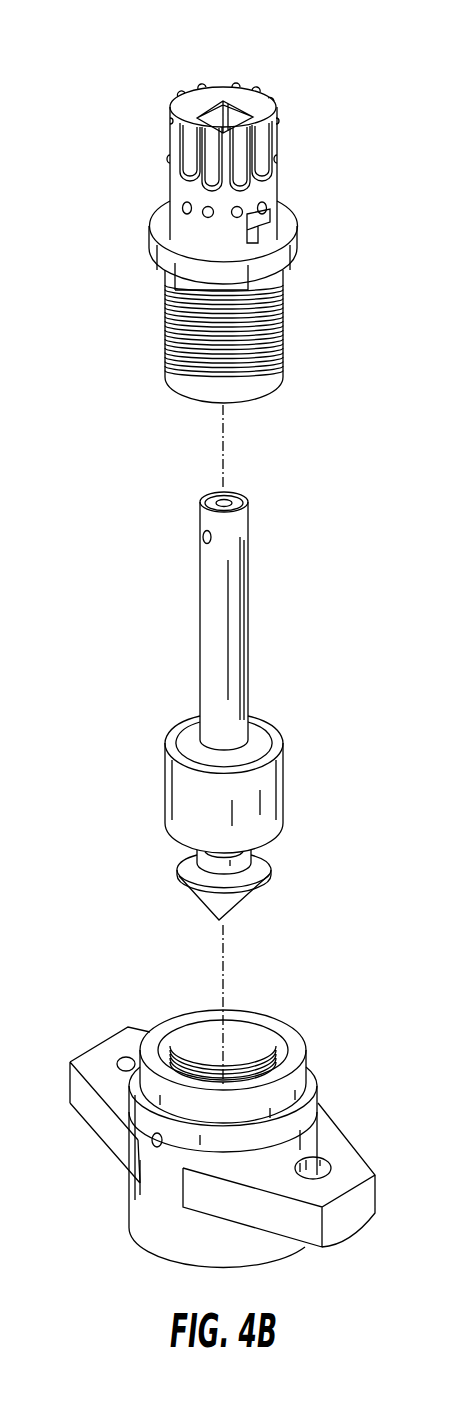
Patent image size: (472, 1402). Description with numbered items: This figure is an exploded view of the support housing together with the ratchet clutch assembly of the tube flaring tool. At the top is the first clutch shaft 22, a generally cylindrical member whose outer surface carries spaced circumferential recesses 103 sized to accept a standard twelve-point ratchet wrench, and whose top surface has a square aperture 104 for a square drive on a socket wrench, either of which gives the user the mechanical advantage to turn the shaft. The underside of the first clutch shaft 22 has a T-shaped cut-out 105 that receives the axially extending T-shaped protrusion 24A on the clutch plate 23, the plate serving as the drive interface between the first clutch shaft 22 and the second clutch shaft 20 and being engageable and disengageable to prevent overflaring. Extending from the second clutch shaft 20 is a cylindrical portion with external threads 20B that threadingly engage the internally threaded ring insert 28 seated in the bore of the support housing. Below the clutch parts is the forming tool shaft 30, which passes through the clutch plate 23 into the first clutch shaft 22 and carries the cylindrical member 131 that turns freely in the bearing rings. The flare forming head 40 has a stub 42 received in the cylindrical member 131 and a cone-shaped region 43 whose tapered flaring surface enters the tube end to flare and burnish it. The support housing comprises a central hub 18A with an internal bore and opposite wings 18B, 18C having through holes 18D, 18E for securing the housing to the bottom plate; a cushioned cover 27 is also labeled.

The first clutch shaft 22 is at (158, 104).
The square aperture 104 is at (238, 110).
The spaced circumferential recesses 103 is at (262, 153).
The T-shaped cut-out 105 is at (266, 212).
The clutch plate 23 is at (286, 221).
The T-shaped protrusion 24A is at (254, 233).
The second clutch shaft 20 is at (264, 336).
The external threads 20B is at (284, 352).
The forming tool shaft 30 is at (248, 633).
The cylindrical member 131 is at (269, 800).
The stub 42 is at (252, 858).
The flare forming head 40 is at (216, 895).
The cone-shaped region 43 is at (229, 898).
The cushioned cover 27 is at (280, 1042).
The ring insert 28 is at (289, 1055).
The central hub 18A is at (152, 1214).
The wing 18B is at (75, 1088).
The wing 18C is at (358, 1175).
The through hole 18D is at (118, 1060).
The through hole 18E is at (330, 1165).